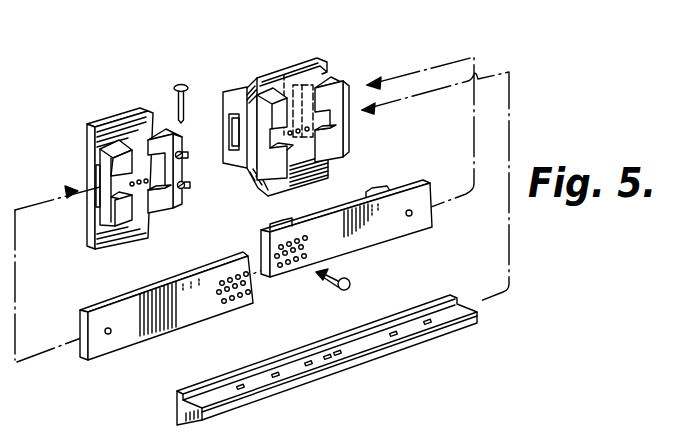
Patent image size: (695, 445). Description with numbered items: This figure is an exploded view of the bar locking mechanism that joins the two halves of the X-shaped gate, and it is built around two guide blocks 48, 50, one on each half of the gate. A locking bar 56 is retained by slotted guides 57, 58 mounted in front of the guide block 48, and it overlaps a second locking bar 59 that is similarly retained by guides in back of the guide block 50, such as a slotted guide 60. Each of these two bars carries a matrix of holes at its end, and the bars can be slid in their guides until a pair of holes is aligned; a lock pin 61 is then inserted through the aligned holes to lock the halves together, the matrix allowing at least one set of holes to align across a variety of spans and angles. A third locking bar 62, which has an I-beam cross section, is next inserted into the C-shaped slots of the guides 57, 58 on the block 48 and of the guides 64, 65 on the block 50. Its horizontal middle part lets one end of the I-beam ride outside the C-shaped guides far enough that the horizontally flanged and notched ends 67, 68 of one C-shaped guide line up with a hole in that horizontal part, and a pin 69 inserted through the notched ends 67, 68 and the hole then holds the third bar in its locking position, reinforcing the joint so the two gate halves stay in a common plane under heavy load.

The guide block 48 is at (107, 124).
The guide block 50 is at (310, 60).
The locking bar 56 is at (188, 317).
The slotted guide 57 is at (130, 214).
The slotted guide 58 is at (176, 198).
The locking bar 59 is at (374, 237).
The slotted guide 60 is at (237, 88).
The lock pin 61 is at (330, 282).
The third locking bar 62 is at (390, 348).
The guide 64 is at (287, 168).
The guide 65 is at (350, 141).
The notched end 67 is at (184, 155).
The notched end 68 is at (186, 185).
The pin 69 is at (184, 93).